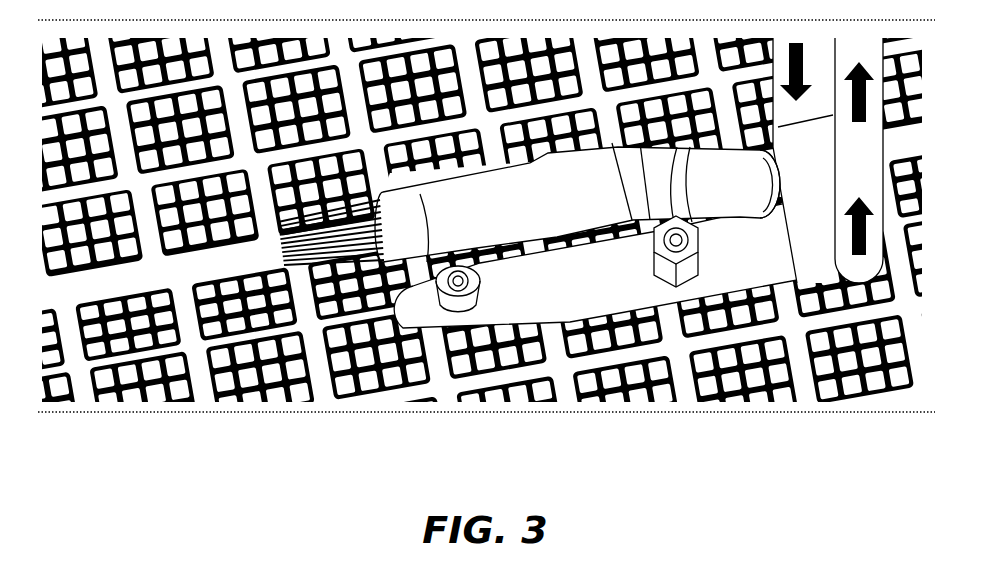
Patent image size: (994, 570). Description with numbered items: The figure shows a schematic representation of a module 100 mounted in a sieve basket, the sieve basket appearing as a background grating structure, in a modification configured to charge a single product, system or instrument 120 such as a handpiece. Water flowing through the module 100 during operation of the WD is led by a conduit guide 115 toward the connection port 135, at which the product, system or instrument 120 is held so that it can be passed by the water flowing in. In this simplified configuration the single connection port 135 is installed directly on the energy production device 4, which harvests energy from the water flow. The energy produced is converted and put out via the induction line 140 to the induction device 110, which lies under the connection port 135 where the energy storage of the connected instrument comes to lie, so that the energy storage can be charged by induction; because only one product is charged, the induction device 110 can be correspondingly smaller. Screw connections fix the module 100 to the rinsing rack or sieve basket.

The module 100 is at (470, 359).
The product, system or instrument 120 is at (447, 240).
The induction device 110 is at (594, 300).
The induction line 140 is at (723, 287).
The connection port 135 is at (775, 175).
The energy production device 4 is at (817, 270).
The conduit guide 115 is at (870, 177).